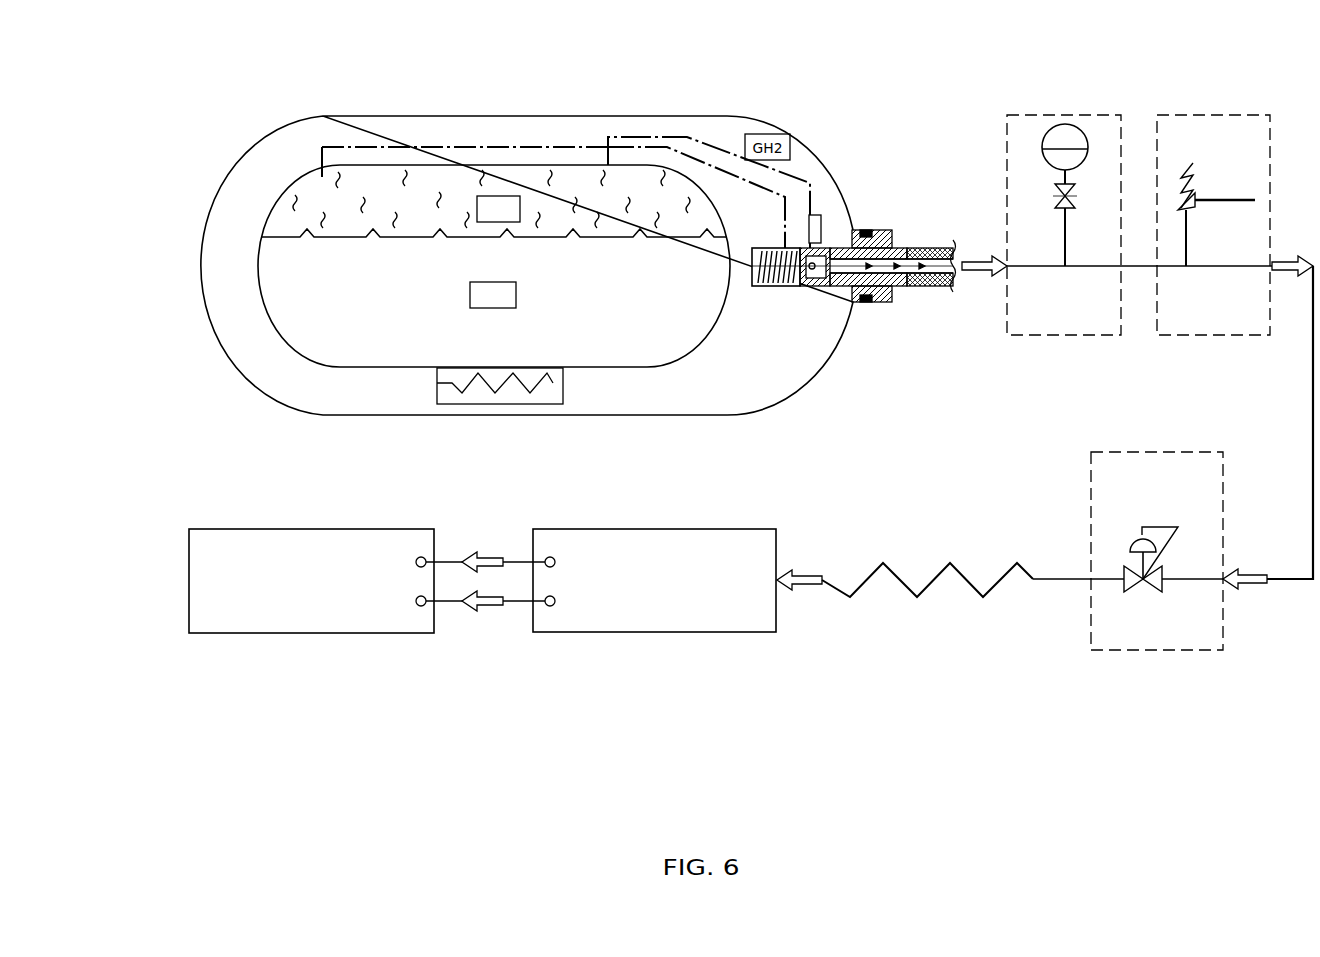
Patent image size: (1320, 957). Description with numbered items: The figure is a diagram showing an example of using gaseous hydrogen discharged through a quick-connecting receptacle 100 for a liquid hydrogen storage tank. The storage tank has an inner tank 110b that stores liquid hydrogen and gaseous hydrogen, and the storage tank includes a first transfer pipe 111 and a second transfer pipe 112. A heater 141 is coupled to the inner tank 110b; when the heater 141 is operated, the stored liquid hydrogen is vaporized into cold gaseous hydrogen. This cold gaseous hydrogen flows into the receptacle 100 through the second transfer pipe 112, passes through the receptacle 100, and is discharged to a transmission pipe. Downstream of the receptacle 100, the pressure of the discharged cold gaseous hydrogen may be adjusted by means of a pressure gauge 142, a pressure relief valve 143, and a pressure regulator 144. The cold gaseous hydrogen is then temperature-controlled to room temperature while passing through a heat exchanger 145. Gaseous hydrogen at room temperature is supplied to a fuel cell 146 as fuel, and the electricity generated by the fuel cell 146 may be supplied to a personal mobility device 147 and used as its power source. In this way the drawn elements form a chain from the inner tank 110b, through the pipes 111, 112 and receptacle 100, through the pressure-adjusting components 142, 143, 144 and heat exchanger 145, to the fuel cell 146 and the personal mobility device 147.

The receptacle 100 is at (886, 204).
The inner tank 110b is at (256, 262).
The first transfer pipe 111 is at (492, 147).
The second transfer pipe 112 is at (672, 137).
The heater 141 is at (437, 388).
The pressure gauge 142 is at (1063, 115).
The pressure relief valve 143 is at (1210, 115).
The pressure regulator 144 is at (1143, 653).
The heat exchanger 145 is at (905, 585).
The fuel cell 146 is at (652, 614).
The personal mobility device 147 is at (307, 614).